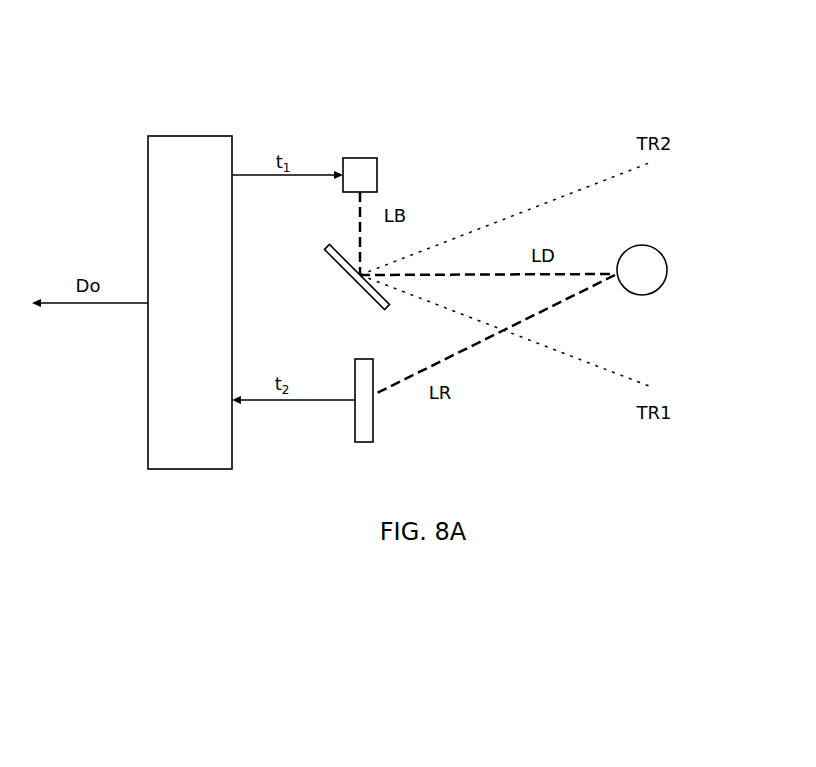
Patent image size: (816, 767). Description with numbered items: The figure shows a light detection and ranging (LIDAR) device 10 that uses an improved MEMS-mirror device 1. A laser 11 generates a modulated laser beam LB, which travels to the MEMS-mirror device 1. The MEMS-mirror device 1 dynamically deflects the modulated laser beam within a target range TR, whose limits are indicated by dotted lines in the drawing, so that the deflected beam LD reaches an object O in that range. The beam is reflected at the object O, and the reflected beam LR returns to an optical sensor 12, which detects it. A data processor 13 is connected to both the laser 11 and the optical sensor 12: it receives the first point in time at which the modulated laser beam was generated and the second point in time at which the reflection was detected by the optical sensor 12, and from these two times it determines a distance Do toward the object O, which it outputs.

The data processor 13 is at (190, 134).
The laser 11 is at (360, 152).
The optical sensor 12 is at (362, 445).
The MEMS-mirror device 1 is at (346, 286).
The light detection and ranging (LIDAR) device 10 is at (199, 528).
The object O is at (652, 256).